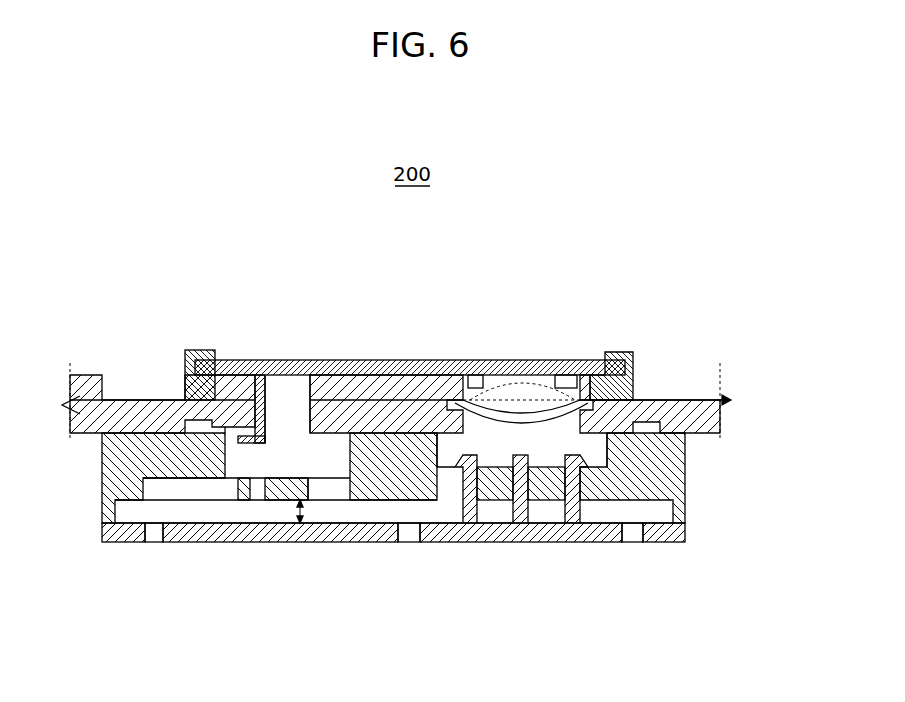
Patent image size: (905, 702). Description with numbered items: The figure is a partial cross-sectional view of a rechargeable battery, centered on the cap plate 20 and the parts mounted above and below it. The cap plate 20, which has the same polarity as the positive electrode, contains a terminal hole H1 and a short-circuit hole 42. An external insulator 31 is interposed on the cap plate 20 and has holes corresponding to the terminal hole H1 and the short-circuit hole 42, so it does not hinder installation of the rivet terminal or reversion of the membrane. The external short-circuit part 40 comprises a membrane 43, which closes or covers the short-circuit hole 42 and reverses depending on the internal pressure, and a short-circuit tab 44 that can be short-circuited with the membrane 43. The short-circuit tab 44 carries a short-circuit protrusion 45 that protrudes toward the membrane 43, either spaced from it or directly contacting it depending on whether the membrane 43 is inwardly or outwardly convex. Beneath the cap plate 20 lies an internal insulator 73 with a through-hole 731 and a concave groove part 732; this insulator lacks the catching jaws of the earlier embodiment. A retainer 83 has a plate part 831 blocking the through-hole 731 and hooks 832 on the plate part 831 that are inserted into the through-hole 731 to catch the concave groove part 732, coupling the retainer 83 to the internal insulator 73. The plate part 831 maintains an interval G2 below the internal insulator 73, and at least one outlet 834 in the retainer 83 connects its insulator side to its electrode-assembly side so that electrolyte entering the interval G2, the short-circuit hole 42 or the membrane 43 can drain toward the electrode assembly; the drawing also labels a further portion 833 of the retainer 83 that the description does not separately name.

The cap plate 20 is at (682, 412).
The external insulator 31 is at (200, 350).
The short-circuit tab 44 is at (378, 360).
The terminal hole H1 is at (267, 408).
The external short-circuit part 40 is at (534, 339).
The short-circuit hole 42 is at (547, 425).
The membrane 43 is at (507, 412).
The short-circuit protrusion 45 is at (566, 380).
The internal insulator 73 is at (439, 536).
The hooks 832 is at (612, 448).
The through-hole 731 is at (488, 468).
The concave groove part 732 is at (455, 452).
The retainer 83 is at (393, 580).
The plate part 831 is at (560, 538).
The opening 833 is at (155, 543).
The outlet 834 is at (407, 537).
The interval G2 is at (299, 512).